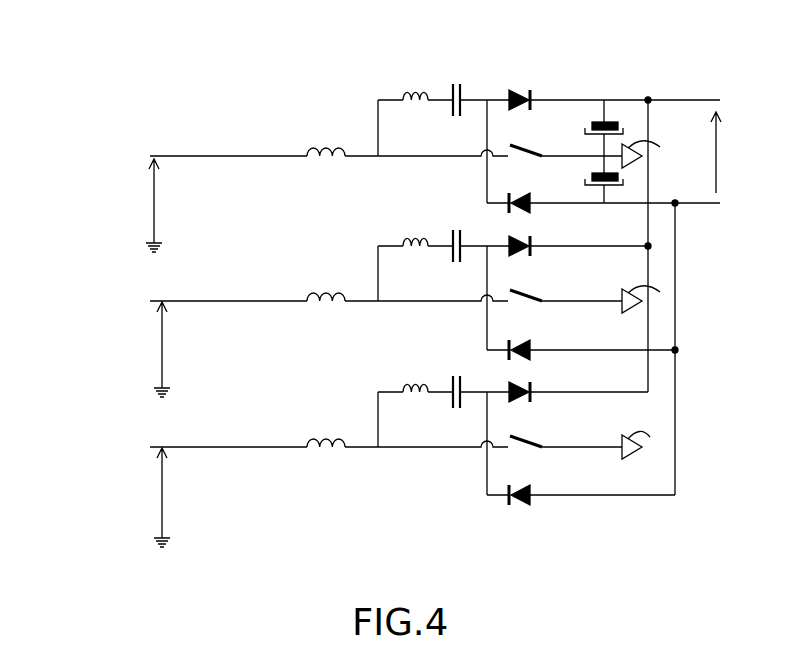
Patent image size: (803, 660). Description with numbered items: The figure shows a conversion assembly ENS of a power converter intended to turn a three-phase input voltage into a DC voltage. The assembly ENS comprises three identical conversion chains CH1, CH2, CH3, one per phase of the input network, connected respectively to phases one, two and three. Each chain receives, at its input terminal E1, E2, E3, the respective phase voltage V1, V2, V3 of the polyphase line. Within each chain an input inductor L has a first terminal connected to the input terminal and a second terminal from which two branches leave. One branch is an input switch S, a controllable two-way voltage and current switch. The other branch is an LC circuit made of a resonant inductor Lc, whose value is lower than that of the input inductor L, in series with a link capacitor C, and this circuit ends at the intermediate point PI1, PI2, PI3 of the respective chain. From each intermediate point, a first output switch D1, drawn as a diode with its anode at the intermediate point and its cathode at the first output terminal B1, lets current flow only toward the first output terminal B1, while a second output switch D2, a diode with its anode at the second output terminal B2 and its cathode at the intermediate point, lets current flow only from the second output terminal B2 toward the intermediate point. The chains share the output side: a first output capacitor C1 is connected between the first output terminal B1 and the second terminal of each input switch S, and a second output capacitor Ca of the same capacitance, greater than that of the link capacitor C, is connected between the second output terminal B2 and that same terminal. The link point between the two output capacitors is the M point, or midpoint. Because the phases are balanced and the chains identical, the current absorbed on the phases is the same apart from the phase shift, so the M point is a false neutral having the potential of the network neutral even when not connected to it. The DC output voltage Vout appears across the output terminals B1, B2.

The conversion assembly ENS is at (146, 46).
The conversion chain CH1 is at (332, 94).
The conversion chain CH2 is at (327, 247).
The conversion chain CH3 is at (327, 392).
The input terminal E1 is at (150, 156).
The input terminal E2 is at (150, 301).
The input terminal E3 is at (150, 447).
The voltage V1 is at (139, 205).
The voltage V2 is at (149, 349).
The voltage V3 is at (149, 497).
The input inductor L is at (326, 282).
The resonant inductor Lc is at (415, 225).
The link capacitor C is at (455, 233).
The first output switch D1 is at (520, 233).
The second output switch D2 is at (520, 336).
The input switch S is at (526, 283).
The M point M is at (651, 300).
The intermediate point PI1 is at (487, 100).
The intermediate point PI2 is at (487, 246).
The intermediate point PI3 is at (487, 392).
The first output capacitor C1 is at (614, 136).
The second output capacitor Ca is at (614, 184).
The first output terminal B1 is at (682, 159).
The second output terminal B2 is at (696, 276).
The output voltage Vout is at (735, 152).